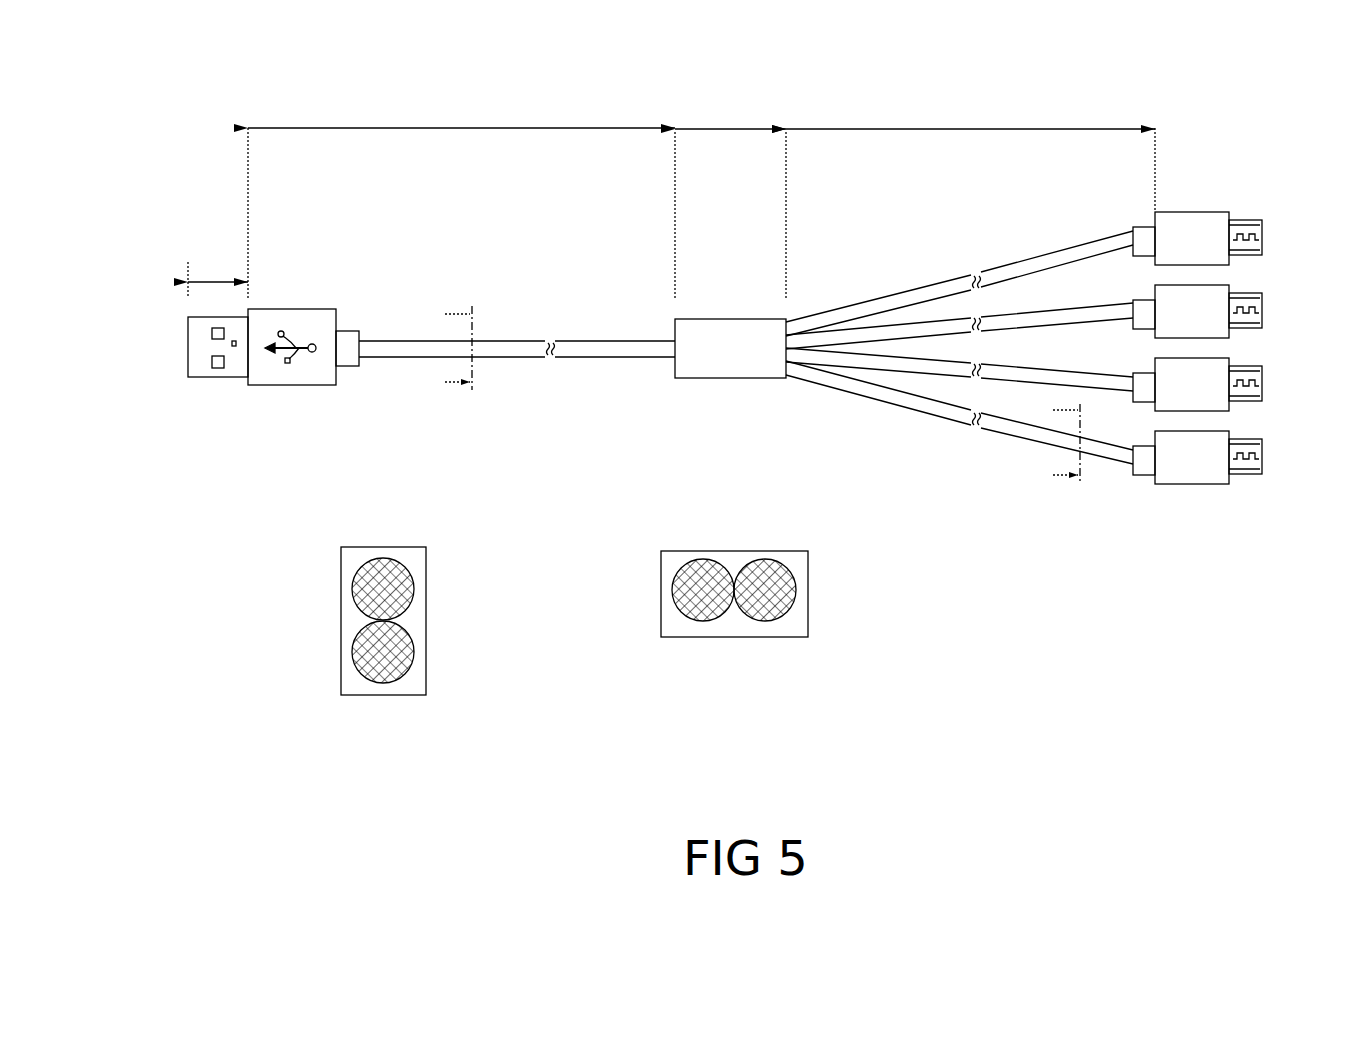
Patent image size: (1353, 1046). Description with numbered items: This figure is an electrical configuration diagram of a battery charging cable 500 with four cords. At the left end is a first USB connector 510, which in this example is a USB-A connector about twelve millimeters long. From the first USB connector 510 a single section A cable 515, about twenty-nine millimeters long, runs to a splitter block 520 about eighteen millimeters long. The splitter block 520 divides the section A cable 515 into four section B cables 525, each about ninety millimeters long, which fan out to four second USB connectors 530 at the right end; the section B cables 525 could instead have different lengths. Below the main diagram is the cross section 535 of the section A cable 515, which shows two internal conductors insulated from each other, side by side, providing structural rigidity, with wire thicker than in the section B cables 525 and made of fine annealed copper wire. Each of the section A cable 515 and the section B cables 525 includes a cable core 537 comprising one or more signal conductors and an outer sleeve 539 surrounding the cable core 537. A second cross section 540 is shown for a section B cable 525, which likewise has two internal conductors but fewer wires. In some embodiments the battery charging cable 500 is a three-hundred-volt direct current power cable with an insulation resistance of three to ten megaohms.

The battery charging cable 500 is at (216, 130).
The first USB connector 510 is at (287, 385).
The section A cable 515 is at (575, 357).
The splitter block 520 is at (700, 378).
The section B cables 525 is at (826, 390).
The second USB connectors 530 is at (1197, 212).
The cross section 535 is at (426, 583).
The cable core 537 is at (351, 643).
The outer sleeve 539 is at (415, 660).
The branch cable cross-section 540 is at (808, 580).